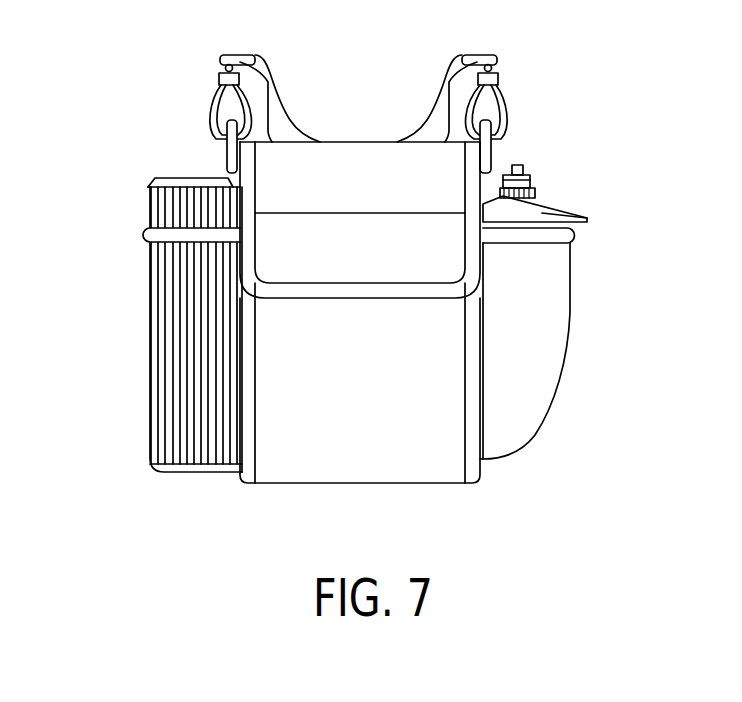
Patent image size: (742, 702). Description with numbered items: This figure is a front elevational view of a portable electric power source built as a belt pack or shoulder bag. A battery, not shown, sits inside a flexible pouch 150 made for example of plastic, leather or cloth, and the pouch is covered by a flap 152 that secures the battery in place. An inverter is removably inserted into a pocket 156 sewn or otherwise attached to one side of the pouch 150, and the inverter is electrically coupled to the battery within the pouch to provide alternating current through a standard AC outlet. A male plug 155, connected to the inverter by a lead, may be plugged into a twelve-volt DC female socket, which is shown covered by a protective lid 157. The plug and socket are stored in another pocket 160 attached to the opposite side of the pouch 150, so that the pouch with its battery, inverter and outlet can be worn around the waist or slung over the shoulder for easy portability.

The flexible pouch 150 is at (430, 428).
The flap 152 is at (435, 188).
The male plug 155 is at (535, 193).
The pocket 156 is at (170, 372).
The protective lid 157 is at (587, 217).
The pocket 160 is at (573, 290).